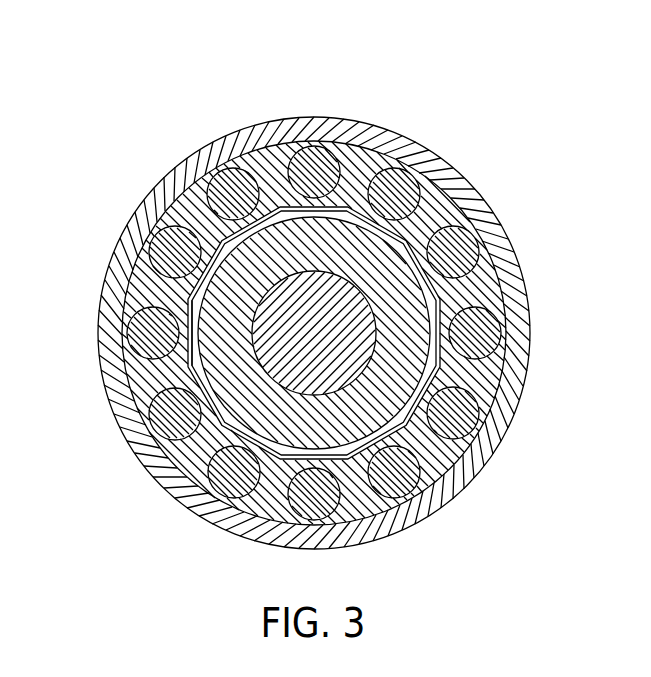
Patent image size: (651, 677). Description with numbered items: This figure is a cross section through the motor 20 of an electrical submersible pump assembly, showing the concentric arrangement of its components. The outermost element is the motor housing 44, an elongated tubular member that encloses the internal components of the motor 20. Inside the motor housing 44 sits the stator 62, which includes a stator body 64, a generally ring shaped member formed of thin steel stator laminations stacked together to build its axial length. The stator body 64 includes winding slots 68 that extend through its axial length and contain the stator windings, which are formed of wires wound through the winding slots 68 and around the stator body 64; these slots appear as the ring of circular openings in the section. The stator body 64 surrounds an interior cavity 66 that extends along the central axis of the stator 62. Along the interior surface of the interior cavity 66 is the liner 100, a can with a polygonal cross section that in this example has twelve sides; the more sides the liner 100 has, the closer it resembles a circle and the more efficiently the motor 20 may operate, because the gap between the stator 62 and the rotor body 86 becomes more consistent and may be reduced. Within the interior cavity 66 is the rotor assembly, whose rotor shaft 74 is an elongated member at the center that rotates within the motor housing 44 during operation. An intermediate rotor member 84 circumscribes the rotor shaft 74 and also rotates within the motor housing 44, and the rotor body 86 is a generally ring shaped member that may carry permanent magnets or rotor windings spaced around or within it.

The motor 20 is at (309, 296).
The motor housing 44 is at (372, 135).
The stator 62 is at (255, 153).
The stator body 64 is at (463, 224).
The interior cavity 66 is at (440, 311).
The winding slots 68 is at (470, 416).
The rotor shaft 74 is at (253, 338).
The intermediate rotor member 84 is at (339, 456).
The rotor body 86 is at (393, 247).
The liner 100 is at (192, 298).